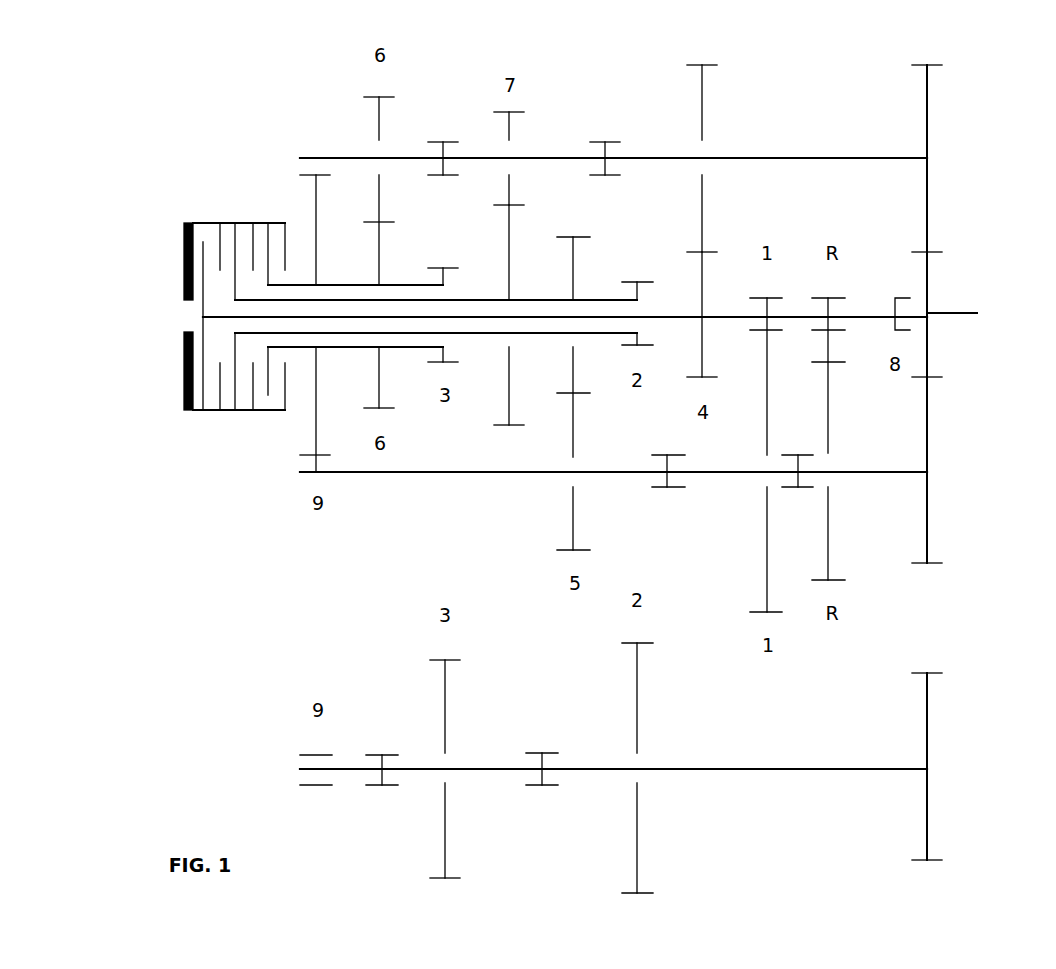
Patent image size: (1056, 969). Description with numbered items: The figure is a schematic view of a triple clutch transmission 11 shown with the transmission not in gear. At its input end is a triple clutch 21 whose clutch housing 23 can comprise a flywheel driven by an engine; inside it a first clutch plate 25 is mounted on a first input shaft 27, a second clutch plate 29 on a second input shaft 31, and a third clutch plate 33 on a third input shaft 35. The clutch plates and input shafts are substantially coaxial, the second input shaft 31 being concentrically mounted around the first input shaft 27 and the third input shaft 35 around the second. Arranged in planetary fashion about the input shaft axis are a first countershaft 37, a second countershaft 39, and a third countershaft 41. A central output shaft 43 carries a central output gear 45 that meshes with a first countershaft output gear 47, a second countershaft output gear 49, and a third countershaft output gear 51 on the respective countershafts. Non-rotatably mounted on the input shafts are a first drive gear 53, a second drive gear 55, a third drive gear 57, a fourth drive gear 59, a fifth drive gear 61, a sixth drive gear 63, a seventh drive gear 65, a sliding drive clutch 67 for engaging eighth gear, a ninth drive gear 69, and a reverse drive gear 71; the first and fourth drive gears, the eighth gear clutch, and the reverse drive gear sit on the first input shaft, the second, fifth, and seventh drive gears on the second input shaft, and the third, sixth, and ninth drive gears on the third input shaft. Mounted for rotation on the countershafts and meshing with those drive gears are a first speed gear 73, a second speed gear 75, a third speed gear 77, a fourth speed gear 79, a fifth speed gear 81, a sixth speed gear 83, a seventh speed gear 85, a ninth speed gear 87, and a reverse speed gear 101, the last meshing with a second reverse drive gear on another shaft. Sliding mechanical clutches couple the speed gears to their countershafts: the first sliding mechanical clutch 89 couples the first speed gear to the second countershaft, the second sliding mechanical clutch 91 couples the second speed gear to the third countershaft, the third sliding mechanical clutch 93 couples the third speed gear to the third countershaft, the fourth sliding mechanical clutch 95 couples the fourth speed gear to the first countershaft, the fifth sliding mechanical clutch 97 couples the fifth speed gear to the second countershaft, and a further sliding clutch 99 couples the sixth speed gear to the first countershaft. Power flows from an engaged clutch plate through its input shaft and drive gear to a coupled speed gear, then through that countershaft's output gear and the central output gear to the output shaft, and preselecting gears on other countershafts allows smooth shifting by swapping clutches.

The triple clutch transmission 11 is at (186, 114).
The triple clutch 21 is at (176, 233).
The clutch housing 23 is at (183, 350).
The first clutch plate 25 is at (203, 242).
The first input shaft 27 is at (220, 318).
The second clutch plate 29 is at (235, 238).
The second input shaft 31 is at (253, 333).
The third clutch plate 33 is at (268, 240).
The third input shaft 35 is at (302, 348).
The first countershaft 37 is at (330, 158).
The second countershaft 39 is at (315, 473).
The third countershaft 41 is at (300, 768).
The central output shaft 43 is at (977, 313).
The central output gear 45 is at (927, 330).
The first countershaft output gear 47 is at (927, 127).
The second countershaft output gear 49 is at (927, 439).
The third countershaft output gear 51 is at (927, 735).
The first drive gear 53 is at (767, 298).
The second drive gear 55 is at (637, 282).
The third drive gear 57 is at (445, 268).
The fourth drive gear 59 is at (705, 258).
The fifth drive gear 61 is at (573, 250).
The sixth drive gear 63 is at (382, 382).
The seventh drive gear 65 is at (509, 252).
The sliding drive clutch for eighth gear 67 is at (895, 298).
The ninth drive gear 69 is at (317, 406).
The reverse drive gear 71 is at (830, 298).
The first speed gear 73 is at (765, 563).
The second speed gear 75 is at (637, 690).
The third speed gear 77 is at (445, 707).
The fourth speed gear 79 is at (702, 110).
The fifth speed gear 81 is at (573, 520).
The sixth speed gear 83 is at (378, 125).
The seventh speed gear 85 is at (509, 110).
The ninth speed gear 87 is at (317, 752).
The first sliding mechanical clutch 89 is at (800, 453).
The second sliding mechanical clutch 91 is at (542, 753).
The third sliding mechanical clutch 93 is at (382, 755).
The fourth sliding mechanical clutch 95 is at (605, 142).
The fifth sliding mechanical clutch 97 is at (667, 487).
The sliding clutch 99 is at (443, 142).
The reverse speed gear 101 is at (830, 562).